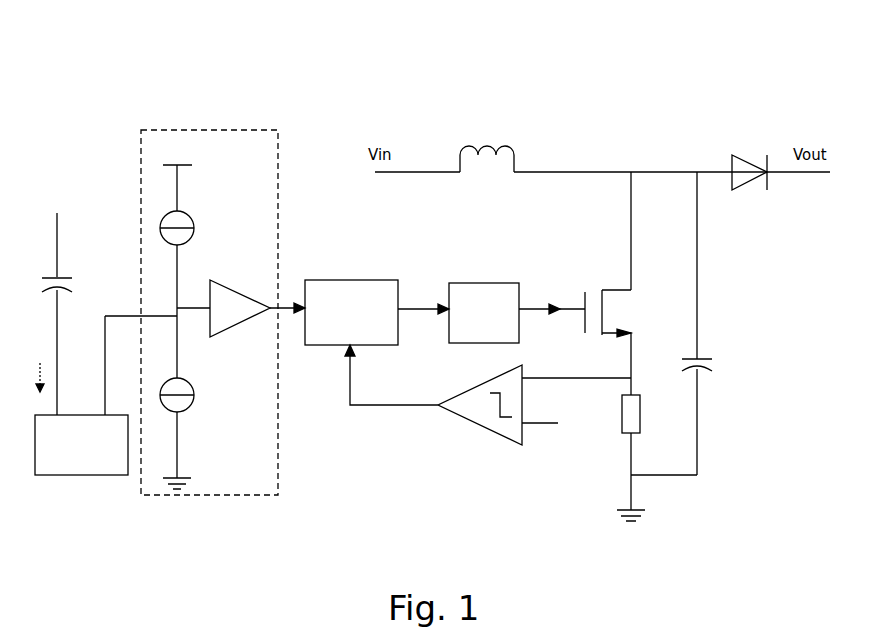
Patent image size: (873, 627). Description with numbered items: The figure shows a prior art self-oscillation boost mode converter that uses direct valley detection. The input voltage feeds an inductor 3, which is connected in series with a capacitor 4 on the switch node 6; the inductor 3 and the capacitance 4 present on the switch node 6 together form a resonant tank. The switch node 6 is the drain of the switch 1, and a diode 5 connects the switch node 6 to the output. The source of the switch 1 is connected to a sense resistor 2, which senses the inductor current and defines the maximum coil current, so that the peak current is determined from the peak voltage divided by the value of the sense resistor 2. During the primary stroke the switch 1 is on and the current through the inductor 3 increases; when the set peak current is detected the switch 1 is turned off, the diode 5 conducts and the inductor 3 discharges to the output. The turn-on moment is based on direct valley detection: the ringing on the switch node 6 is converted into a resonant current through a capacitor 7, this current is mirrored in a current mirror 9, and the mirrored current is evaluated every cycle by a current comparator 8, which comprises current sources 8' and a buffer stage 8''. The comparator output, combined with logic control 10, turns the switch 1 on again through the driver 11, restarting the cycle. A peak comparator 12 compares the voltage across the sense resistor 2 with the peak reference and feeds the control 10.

The switch 1 is at (638, 292).
The sense resistor 2 is at (653, 433).
The inductor 3 is at (462, 138).
The capacitor 4 is at (715, 345).
The diode 5 is at (732, 160).
The switch node 6 is at (600, 148).
The capacitor 7 is at (0, 195).
The current comparator 8 is at (205, 260).
The current sources 8' is at (201, 400).
The buffer stage 8'' is at (246, 416).
The current mirror 9 is at (75, 483).
The logic control 10 is at (325, 337).
The driver 11 is at (457, 335).
The peak comparator 12 is at (508, 432).